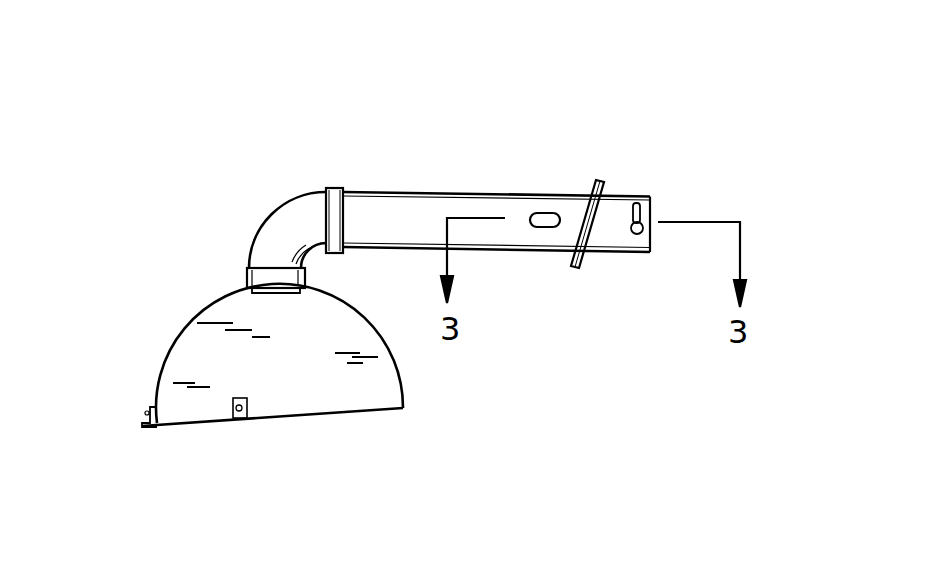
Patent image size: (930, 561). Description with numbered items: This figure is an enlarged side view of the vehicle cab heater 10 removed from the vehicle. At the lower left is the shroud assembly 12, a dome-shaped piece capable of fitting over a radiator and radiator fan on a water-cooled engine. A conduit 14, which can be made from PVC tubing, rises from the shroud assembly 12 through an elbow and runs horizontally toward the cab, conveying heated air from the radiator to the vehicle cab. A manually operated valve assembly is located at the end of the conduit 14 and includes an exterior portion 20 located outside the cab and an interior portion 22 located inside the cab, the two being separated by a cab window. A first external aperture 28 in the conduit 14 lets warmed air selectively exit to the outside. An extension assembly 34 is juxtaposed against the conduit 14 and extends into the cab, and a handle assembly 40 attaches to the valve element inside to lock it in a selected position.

The vehicle cab heater 10 is at (292, 153).
The shroud assembly 12 is at (185, 368).
The conduit 14 is at (368, 213).
The exterior portion 20 is at (572, 210).
The interior portion 22 is at (595, 237).
The first external aperture 28 is at (547, 214).
The extension assembly 34 is at (612, 205).
The handle assembly 40 is at (641, 225).